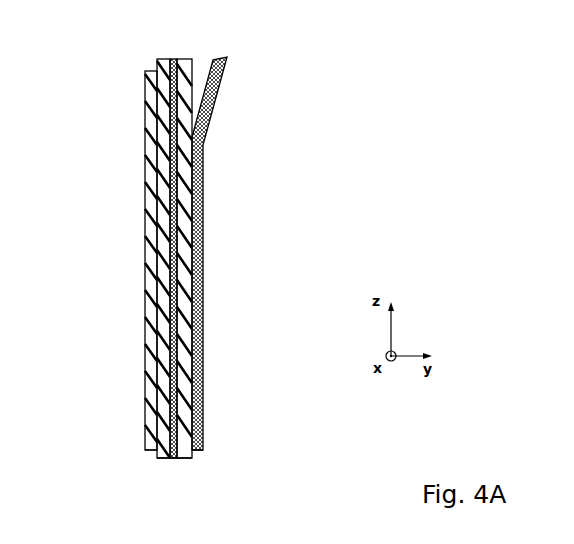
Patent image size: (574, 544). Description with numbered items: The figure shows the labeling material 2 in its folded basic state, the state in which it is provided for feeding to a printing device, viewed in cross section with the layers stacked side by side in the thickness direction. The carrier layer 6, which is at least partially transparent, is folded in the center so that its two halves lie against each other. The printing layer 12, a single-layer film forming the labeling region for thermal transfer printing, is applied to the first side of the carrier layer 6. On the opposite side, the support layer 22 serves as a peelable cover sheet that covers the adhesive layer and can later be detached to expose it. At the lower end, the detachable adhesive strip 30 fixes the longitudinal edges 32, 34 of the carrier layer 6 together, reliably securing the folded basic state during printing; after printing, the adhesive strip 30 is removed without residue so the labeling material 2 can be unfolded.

The labeling material 2 is at (101, 104).
The carrier layer 6 is at (163, 275).
The printing layer 12 is at (156, 373).
The support layer 22 is at (203, 342).
The adhesive strip 30 is at (158, 459).
The longitudinal edge 32 is at (157, 439).
The longitudinal edge 34 is at (203, 437).